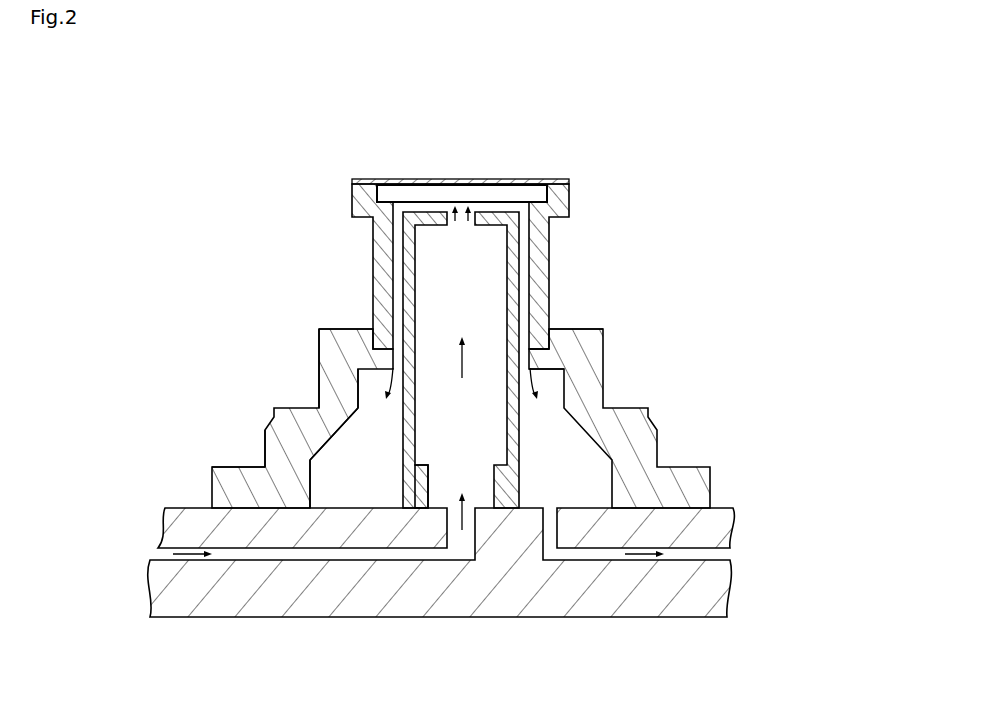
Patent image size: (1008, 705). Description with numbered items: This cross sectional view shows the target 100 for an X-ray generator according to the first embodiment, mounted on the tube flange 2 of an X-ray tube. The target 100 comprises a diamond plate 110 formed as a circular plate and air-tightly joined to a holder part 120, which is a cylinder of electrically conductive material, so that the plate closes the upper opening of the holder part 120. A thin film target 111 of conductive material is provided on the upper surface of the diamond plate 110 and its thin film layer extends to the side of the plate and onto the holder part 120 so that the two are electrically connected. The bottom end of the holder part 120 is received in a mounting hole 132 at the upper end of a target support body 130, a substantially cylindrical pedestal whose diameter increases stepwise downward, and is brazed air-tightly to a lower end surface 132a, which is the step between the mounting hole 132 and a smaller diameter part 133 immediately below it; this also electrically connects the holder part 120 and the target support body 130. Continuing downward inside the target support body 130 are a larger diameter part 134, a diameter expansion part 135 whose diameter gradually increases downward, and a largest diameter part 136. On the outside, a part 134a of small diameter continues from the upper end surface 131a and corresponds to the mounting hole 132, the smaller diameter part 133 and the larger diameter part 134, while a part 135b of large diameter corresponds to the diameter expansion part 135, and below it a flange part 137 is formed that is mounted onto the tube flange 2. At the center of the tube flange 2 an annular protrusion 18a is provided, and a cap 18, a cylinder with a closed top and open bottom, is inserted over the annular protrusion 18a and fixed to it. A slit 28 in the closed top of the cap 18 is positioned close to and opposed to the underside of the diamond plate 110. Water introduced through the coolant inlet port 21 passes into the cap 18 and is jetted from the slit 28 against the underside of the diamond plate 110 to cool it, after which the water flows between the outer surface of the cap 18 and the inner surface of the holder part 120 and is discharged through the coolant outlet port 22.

The tube flange 2 is at (475, 553).
The coolant inlet port 21 is at (218, 555).
The coolant outlet port 22 is at (705, 553).
The cap 18 is at (543, 449).
The annular protrusion 18a is at (420, 488).
The slit 28 is at (478, 224).
The target 100 is at (542, 387).
The diamond plate 110 is at (463, 195).
The thin film target 111 is at (507, 183).
The holder part 120 is at (550, 183).
The target support body 130 is at (416, 379).
The upper end surface 131a is at (578, 329).
The mounting hole 132 is at (372, 315).
The lower end surface 132a is at (545, 345).
The smaller diameter part 133 is at (533, 364).
The larger diameter part 134 is at (360, 385).
The part of a small diameter 134a is at (318, 345).
The diameter expansion part 135 is at (338, 440).
The part of a large diameter 135b is at (262, 447).
The largest diameter part 136 is at (310, 468).
The flange part 137 is at (218, 488).